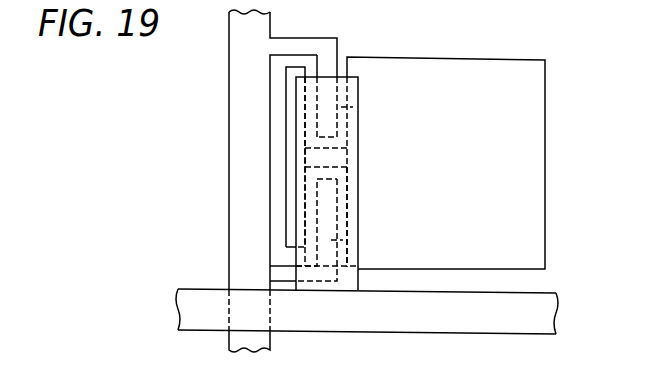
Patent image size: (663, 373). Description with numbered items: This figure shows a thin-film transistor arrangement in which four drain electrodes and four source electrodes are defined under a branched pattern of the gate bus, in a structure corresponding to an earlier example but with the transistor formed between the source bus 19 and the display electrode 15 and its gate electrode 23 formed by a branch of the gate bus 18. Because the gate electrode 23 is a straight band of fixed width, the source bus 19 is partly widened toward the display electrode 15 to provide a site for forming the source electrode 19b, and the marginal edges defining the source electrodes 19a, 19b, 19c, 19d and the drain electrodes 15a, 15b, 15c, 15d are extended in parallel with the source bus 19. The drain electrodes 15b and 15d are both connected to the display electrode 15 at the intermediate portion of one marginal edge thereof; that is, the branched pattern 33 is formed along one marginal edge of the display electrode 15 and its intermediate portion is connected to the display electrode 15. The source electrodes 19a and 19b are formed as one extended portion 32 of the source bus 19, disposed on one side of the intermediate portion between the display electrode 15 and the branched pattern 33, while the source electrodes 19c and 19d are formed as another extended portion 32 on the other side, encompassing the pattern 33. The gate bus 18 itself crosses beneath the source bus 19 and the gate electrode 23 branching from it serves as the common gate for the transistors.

The display electrode 15 is at (538, 129).
The drain electrode 15a is at (303, 93).
The drain electrode 15b is at (347, 125).
The drain electrode 15c is at (303, 223).
The drain electrode 15d is at (349, 223).
The gate bus 18 is at (199, 333).
The source bus 19 is at (235, 57).
The source electrode 19a is at (313, 117).
The source electrode 19b is at (338, 137).
The source electrode 19c is at (313, 194).
The source electrode 19d is at (338, 193).
The gate electrode 23 is at (358, 80).
The extended portion of the source bus 32 is at (347, 107).
The branched pattern 33 is at (288, 180).